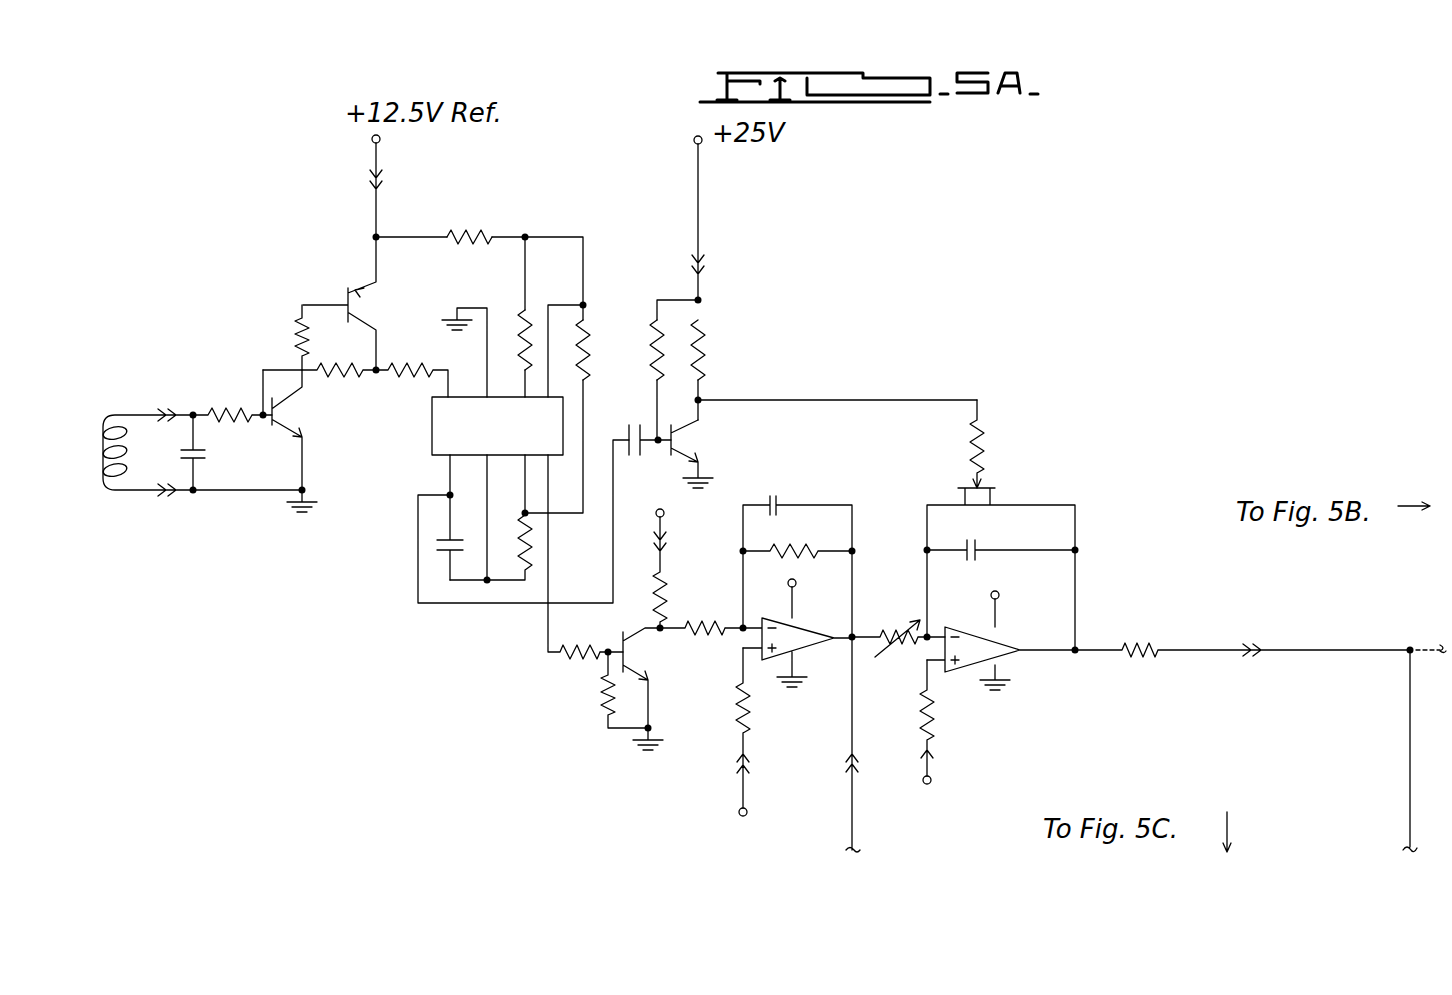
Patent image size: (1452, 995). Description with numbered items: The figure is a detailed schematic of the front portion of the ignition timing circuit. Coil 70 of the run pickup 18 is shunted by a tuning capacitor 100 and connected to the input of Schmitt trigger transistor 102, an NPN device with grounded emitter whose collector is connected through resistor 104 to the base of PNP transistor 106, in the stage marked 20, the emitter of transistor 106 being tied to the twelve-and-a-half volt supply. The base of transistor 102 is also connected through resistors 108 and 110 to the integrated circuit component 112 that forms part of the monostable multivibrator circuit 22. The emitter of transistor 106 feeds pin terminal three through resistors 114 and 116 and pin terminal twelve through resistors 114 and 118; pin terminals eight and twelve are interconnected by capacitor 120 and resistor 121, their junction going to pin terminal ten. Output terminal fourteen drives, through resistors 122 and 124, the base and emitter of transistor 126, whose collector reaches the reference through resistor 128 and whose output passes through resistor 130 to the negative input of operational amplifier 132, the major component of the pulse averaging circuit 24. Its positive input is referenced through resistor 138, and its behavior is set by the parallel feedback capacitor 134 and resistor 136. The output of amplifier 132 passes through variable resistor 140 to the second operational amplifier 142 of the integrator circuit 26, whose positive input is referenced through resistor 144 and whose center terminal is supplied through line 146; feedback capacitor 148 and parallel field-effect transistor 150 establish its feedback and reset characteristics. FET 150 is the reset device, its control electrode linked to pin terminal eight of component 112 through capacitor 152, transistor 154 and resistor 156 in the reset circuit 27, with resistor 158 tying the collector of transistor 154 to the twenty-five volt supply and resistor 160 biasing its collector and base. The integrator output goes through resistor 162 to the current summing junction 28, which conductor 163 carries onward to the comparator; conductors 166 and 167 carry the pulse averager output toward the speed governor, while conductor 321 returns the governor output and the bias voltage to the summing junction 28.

The run pickup 18 is at (221, 513).
The amplifier stage 20 is at (335, 282).
The monostable multivibrator circuit 22 is at (600, 219).
The pulse averaging circuit 24 is at (807, 469).
The integrator circuit 26 is at (950, 483).
The reset circuit 27 is at (897, 400).
The summing junction 28 is at (1406, 630).
The coil 70 is at (106, 417).
The tuning capacitor 100 is at (202, 457).
The Schmitt trigger transistor 102 is at (283, 411).
The resistor 104 is at (300, 336).
The PNP transistor 106 is at (357, 309).
The resistor 108 is at (349, 366).
The resistor 110 is at (422, 364).
The integrated circuit component 112 is at (430, 425).
The resistor 114 is at (470, 230).
The resistor 116 is at (535, 307).
The resistor 118 is at (588, 340).
The capacitor 120 is at (435, 546).
The resistor 121 is at (521, 547).
The resistor 122 is at (577, 660).
The resistor 124 is at (600, 707).
The transistor 126 is at (630, 656).
The resistor 128 is at (666, 594).
The resistor 130 is at (718, 609).
The operational amplifier 132 is at (826, 646).
The capacitor 134 is at (783, 496).
The resistor 136 is at (780, 549).
The resistor 138 is at (736, 697).
The variable resistor 140 is at (902, 626).
The second operational amplifier 142 is at (1005, 656).
The resistor 144 is at (927, 697).
The line 146 is at (1000, 619).
The capacitor 148 is at (978, 541).
The field-effect transistor 150 is at (985, 482).
The capacitor 152 is at (640, 408).
The transistor 154 is at (681, 447).
The resistor 156 is at (985, 442).
The resistor 158 is at (703, 342).
The resistor 160 is at (650, 356).
The resistor 162 is at (1138, 640).
The conductor 163 is at (1420, 648).
The conductor 166 is at (852, 745).
The conductor 167 is at (846, 830).
The conductor 321 is at (1407, 705).